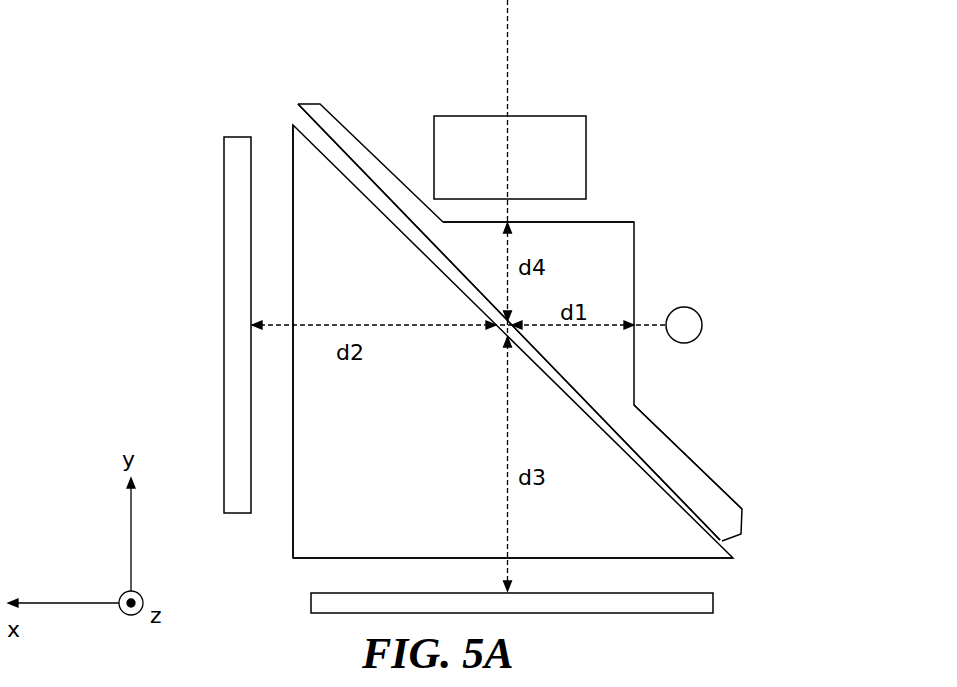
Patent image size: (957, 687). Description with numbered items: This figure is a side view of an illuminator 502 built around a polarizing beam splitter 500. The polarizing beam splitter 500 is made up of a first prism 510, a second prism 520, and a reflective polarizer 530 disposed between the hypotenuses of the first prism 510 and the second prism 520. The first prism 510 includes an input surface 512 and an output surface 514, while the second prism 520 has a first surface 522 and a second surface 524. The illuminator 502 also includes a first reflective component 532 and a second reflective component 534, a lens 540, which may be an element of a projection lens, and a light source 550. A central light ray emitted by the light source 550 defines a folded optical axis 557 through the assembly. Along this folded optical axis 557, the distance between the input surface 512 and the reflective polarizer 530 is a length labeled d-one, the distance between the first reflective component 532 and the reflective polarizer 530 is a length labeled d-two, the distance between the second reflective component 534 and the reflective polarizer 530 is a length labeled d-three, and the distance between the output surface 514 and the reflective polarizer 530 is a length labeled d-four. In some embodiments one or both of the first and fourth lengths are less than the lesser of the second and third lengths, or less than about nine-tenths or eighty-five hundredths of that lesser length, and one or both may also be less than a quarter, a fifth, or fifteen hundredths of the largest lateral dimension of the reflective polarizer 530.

The polarizing beam splitter 500 is at (291, 150).
The illuminator 502 is at (127, 183).
The first prism 510 is at (332, 121).
The input surface 512 is at (634, 250).
The output surface 514 is at (596, 222).
The second prism 520 is at (315, 537).
The first surface 522 is at (293, 522).
The second surface 524 is at (310, 558).
The reflective polarizer 530 is at (320, 138).
The first reflective component 532 is at (237, 292).
The second reflective component 534 is at (702, 603).
The lens 540 is at (467, 148).
The light source 550 is at (694, 323).
The folded optical axis 557 is at (508, 42).